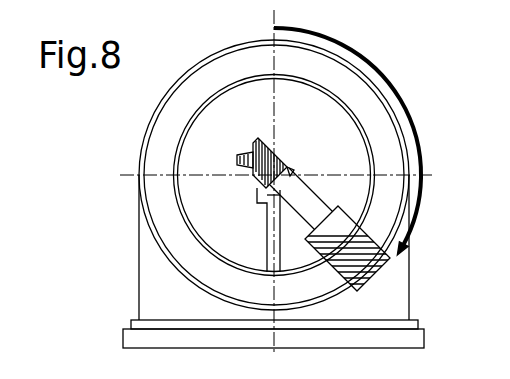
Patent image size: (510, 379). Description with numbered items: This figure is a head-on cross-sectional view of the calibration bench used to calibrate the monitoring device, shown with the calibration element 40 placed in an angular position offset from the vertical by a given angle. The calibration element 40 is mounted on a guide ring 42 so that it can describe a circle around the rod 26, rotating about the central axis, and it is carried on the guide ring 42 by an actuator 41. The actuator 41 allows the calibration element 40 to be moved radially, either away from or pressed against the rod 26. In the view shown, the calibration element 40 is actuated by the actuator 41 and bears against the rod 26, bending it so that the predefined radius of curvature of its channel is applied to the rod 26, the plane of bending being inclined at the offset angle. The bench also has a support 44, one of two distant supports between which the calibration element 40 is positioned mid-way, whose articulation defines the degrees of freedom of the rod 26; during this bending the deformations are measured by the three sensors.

The rod 26 is at (252, 150).
The calibration element 40 is at (246, 162).
The actuator 41 is at (348, 230).
The guide ring 42 is at (152, 215).
The support 44 is at (262, 248).